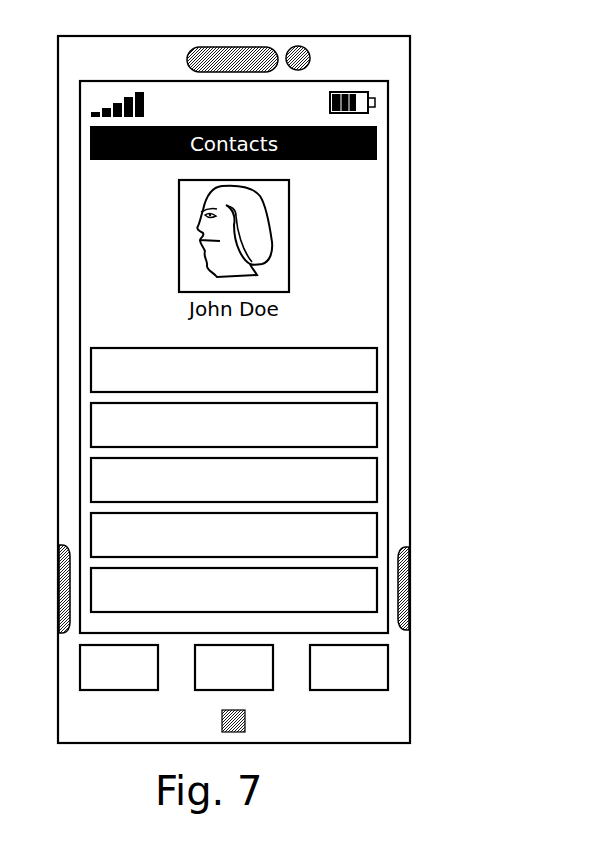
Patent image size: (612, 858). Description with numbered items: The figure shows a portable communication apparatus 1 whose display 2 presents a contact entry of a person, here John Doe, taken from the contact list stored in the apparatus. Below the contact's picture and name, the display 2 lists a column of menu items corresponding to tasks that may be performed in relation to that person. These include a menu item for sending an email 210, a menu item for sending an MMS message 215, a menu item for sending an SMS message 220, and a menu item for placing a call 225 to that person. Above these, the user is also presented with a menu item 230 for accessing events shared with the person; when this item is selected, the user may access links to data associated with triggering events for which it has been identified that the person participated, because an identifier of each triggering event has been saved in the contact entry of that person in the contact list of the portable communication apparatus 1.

The portable communication apparatus 1 is at (410, 93).
The display 2 is at (377, 223).
The menu item for accessing events shared with the person 230 is at (365, 368).
The menu item for placing a call 225 is at (365, 423).
The menu item for sending an SMS message 220 is at (365, 478).
The menu item for sending an MMS message 215 is at (365, 535).
The menu item for sending an email 210 is at (365, 590).